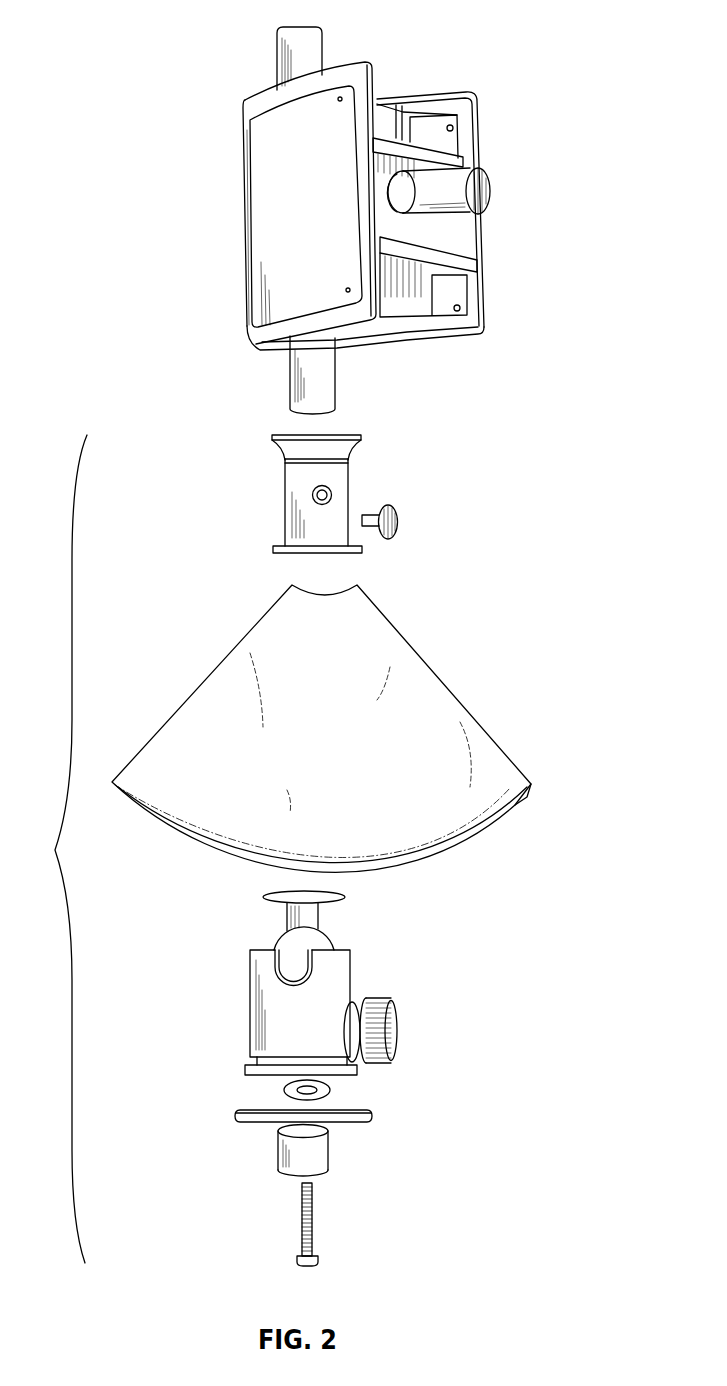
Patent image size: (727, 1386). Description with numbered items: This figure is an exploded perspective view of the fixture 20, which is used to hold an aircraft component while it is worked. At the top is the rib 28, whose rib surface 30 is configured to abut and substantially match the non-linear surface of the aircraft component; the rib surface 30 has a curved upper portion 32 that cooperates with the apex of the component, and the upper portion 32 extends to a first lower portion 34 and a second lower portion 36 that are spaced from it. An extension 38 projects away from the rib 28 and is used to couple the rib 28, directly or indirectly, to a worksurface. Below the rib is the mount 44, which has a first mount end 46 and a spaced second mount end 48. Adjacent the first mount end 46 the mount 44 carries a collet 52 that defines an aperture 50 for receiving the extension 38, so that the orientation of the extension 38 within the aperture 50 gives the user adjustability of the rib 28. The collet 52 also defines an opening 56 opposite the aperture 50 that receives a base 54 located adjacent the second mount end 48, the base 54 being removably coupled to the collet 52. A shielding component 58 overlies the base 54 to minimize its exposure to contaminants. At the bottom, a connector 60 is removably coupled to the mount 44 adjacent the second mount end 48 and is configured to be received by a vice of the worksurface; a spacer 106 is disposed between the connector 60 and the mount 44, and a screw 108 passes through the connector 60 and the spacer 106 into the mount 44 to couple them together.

The fixture 20 is at (530, 403).
The rib 28 is at (485, 260).
The rib surface 30 is at (308, 253).
The upper portion 32 is at (242, 172).
The first lower portion 34 is at (373, 188).
The second lower portion 36 is at (480, 128).
The extension 38 is at (292, 50).
The mount 44 is at (52, 849).
The first mount end 46 is at (300, 435).
The second mount end 48 is at (310, 1178).
The aperture 50 is at (333, 425).
The collet 52 is at (351, 534).
The base 54 is at (357, 975).
The opening 56 is at (305, 553).
The shielding component 58 is at (487, 760).
The connector 60 is at (377, 1115).
The spacer 106 is at (330, 1090).
The screw 108 is at (312, 1225).